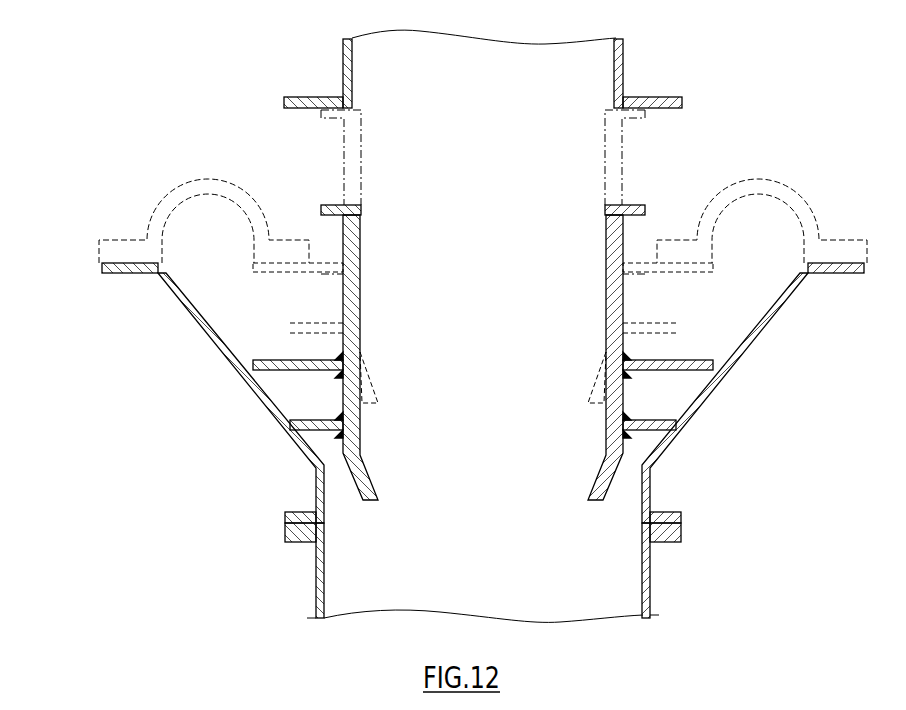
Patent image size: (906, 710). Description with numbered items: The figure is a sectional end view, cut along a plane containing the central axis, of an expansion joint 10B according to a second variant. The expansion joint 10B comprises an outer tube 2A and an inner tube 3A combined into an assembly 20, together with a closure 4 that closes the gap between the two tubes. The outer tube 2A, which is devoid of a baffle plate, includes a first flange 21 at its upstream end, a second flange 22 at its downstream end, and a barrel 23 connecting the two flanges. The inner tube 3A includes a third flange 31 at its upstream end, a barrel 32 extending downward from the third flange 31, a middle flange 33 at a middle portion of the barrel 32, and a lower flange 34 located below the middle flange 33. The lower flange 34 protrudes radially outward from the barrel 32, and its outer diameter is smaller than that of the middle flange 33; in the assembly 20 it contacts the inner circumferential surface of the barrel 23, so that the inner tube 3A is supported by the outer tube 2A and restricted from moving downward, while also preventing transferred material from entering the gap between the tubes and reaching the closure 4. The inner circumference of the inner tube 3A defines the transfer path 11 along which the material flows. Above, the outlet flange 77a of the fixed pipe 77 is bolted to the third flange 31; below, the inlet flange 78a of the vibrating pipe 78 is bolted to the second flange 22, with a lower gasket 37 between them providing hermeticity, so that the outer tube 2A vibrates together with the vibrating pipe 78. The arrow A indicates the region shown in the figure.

The fixed pipe 77 is at (625, 47).
The outlet flange 77a is at (681, 103).
The connection region A is at (764, 154).
The inner tube 3A is at (321, 210).
The third flange 31 is at (645, 213).
The barrel 32 is at (362, 285).
The middle flange 33 is at (262, 358).
The lower flange 34 is at (313, 432).
The closure 4 is at (186, 180).
The first flange 21 is at (135, 277).
The assembly 20 is at (785, 353).
The barrel 23 is at (253, 400).
The outer tube 2A is at (683, 437).
The second flange 22 is at (285, 515).
The inlet flange 78a is at (285, 537).
The lower gasket 37 is at (681, 524).
The vibrating pipe 78 is at (315, 600).
The transfer path 11 is at (499, 371).
The expansion joint 10B is at (106, 447).